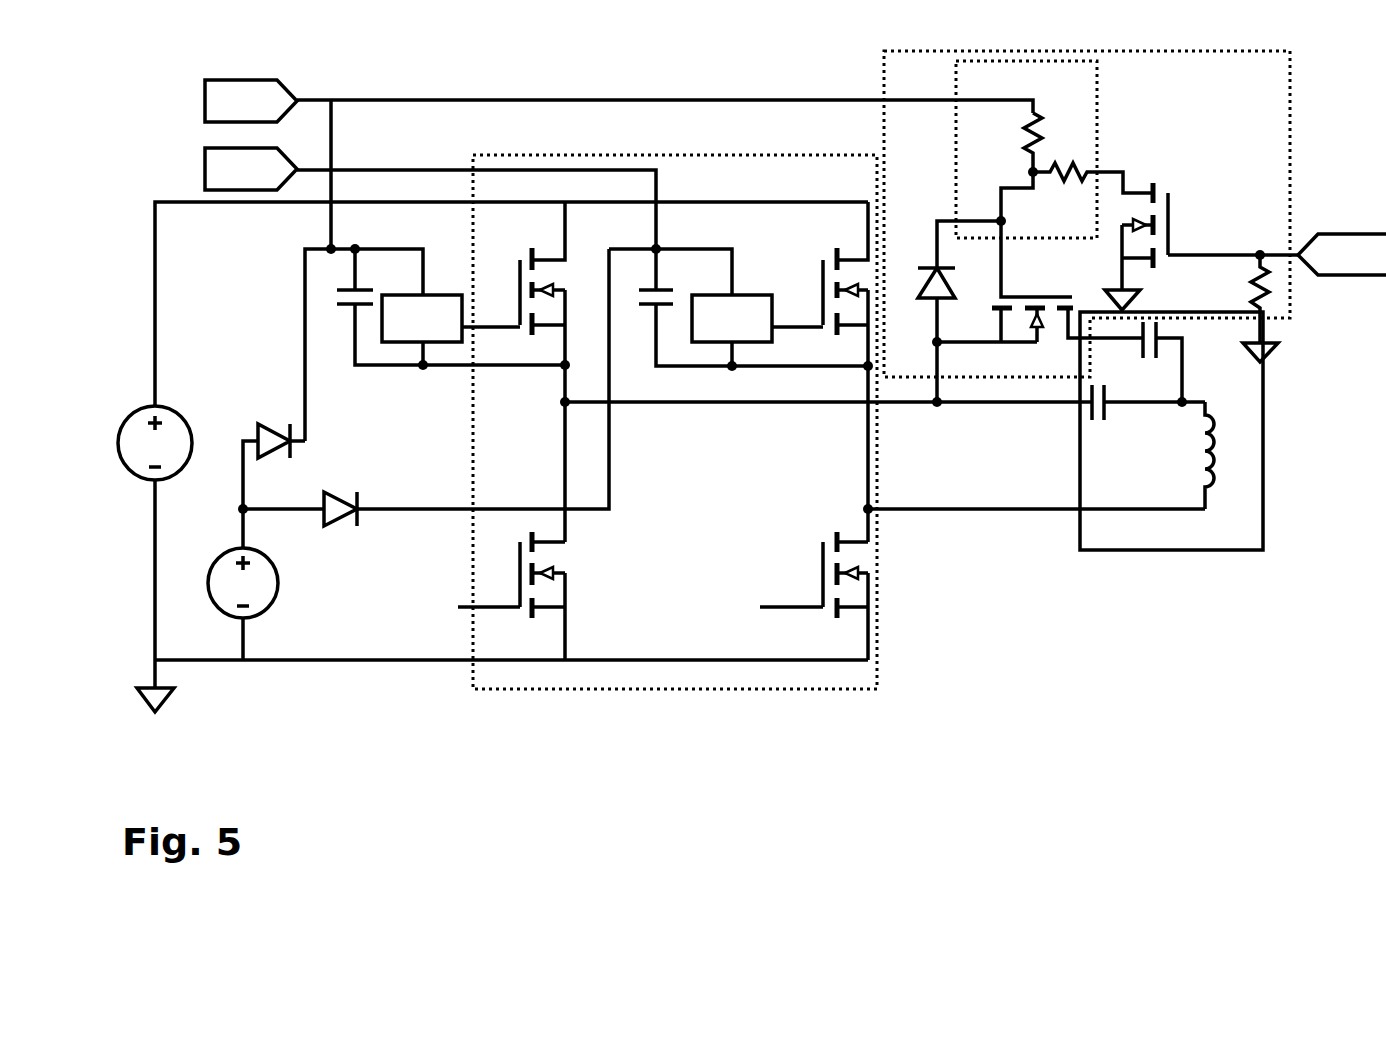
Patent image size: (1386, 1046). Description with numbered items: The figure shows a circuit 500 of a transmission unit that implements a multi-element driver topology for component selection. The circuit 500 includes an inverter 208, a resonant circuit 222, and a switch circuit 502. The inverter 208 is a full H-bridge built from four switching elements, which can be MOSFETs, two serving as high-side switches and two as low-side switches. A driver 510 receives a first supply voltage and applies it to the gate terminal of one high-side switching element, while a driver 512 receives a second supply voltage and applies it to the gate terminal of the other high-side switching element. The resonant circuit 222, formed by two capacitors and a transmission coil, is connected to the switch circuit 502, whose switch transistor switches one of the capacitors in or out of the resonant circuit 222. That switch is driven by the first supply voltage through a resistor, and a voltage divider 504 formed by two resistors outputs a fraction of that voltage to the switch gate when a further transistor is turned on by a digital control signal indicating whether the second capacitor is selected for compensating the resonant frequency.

The circuit 500 is at (732, 417).
The inverter 208 is at (531, 690).
The driver 510 is at (451, 330).
The driver 512 is at (757, 330).
The switch circuit 502 is at (1047, 222).
The voltage divider 504 is at (1097, 88).
The resonant circuit 222 is at (1155, 535).